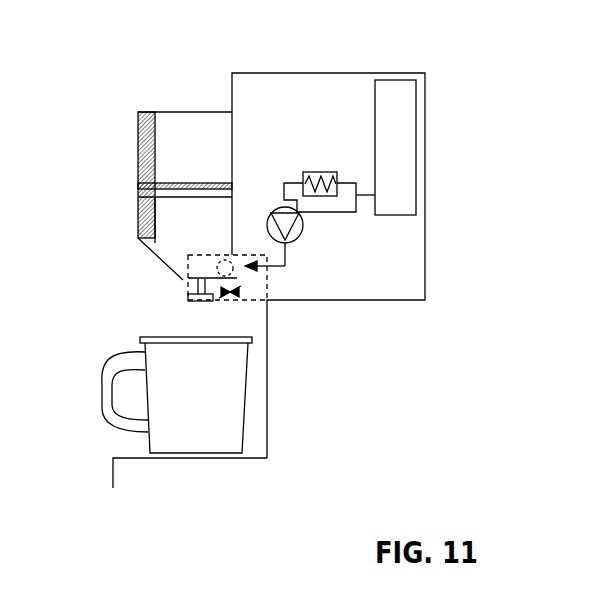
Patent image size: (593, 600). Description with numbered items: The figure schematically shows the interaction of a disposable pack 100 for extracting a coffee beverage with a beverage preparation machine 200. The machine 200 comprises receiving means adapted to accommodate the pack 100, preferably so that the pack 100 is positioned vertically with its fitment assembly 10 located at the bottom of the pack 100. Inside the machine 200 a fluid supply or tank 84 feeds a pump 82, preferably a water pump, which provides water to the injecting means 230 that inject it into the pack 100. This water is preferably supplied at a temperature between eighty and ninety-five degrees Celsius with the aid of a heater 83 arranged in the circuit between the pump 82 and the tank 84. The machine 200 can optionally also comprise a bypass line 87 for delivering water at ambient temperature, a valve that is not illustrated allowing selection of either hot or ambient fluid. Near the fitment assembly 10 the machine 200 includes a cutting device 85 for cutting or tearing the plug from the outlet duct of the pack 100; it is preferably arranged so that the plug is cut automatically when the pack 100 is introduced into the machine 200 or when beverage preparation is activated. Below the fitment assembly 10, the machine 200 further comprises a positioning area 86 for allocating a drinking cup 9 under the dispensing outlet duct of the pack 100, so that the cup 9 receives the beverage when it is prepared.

The pack 100 is at (122, 147).
The machine 200 is at (465, 153).
The fluid supply or tank 84 is at (395, 135).
The bypass line 87 is at (346, 212).
The heater 83 is at (317, 172).
The pump 82 is at (333, 242).
The injecting means 230 is at (270, 268).
The fitment assembly 10 is at (192, 265).
The cutting device 85 is at (230, 305).
The drinking cup 9 is at (223, 447).
The positioning area 86 is at (185, 462).